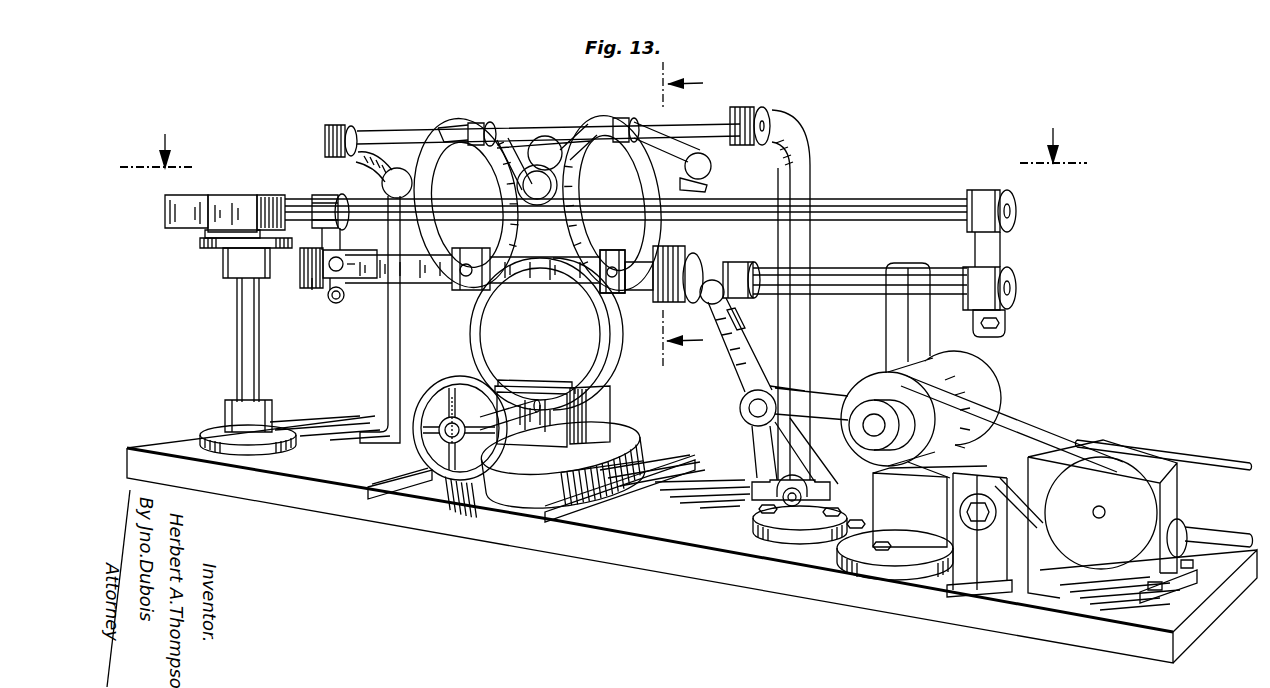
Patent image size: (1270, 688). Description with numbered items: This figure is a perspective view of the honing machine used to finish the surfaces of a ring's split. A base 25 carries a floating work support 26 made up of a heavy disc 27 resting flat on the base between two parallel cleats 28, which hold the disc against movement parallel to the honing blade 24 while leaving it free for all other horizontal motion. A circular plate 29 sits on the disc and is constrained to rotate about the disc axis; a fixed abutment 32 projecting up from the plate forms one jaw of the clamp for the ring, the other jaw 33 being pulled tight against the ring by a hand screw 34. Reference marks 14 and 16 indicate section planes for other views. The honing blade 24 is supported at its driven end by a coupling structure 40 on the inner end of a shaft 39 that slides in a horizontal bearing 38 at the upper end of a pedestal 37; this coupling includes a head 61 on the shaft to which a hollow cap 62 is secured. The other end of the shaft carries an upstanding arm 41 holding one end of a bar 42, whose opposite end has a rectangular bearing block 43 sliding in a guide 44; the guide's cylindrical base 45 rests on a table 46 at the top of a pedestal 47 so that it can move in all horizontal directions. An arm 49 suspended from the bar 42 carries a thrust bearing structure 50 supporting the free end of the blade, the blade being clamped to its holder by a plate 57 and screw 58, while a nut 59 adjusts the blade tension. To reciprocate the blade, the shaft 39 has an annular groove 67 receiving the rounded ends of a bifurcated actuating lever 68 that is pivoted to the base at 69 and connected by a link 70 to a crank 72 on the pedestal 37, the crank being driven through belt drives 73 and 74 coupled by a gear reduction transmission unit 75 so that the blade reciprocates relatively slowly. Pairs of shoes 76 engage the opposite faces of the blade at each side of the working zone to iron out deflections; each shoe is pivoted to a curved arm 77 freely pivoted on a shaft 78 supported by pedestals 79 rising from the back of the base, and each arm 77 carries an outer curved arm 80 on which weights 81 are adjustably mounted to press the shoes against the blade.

The section line 14- 14 is at (672, 214).
The ring / section line 16- 16 is at (473, 332).
The honing blade 24 is at (392, 300).
The base 25 is at (730, 570).
The work support 26 is at (641, 424).
The heavy disc 27 is at (495, 545).
The cleats 28 is at (367, 490).
The circular plate 29 is at (619, 423).
The fixed abutment 32 is at (577, 373).
The jaw 33 is at (513, 387).
The hand screw 34 is at (537, 390).
The pedestal 37 is at (902, 327).
The horizontal bearing 38 is at (947, 255).
The shaft 39 is at (846, 282).
The coupling structure 40 is at (718, 249).
The arm 41 is at (1006, 253).
The bar 42 is at (922, 212).
The rectangular bearing block 43 is at (188, 205).
The guide 44 is at (226, 203).
The cylindrical base 45 is at (203, 233).
The table 46 is at (203, 247).
The pedestal 47 is at (247, 337).
The arm 49 is at (328, 195).
The thrust bearing structure 50 is at (317, 301).
The plate 57 is at (373, 243).
The screw 58 is at (345, 290).
The nut 59 is at (303, 283).
The head 61 is at (693, 253).
The hollow cap 62 is at (663, 283).
The annular groove 67 is at (730, 262).
The bifurcated actuating lever 68 is at (728, 355).
The pivot 69 is at (790, 500).
The link 70 is at (824, 397).
The crank 72 is at (976, 384).
The belt drive 73 is at (1032, 428).
The belt drive 74 is at (1203, 450).
The gear reduction transmission unit 75 is at (1173, 503).
The shoes 76 is at (480, 240).
The curved arm 77 is at (429, 191).
The shaft 78 is at (693, 127).
The pedestals 79 is at (390, 113).
The outer curved arm 80 is at (417, 128).
The weights 81 is at (386, 183).